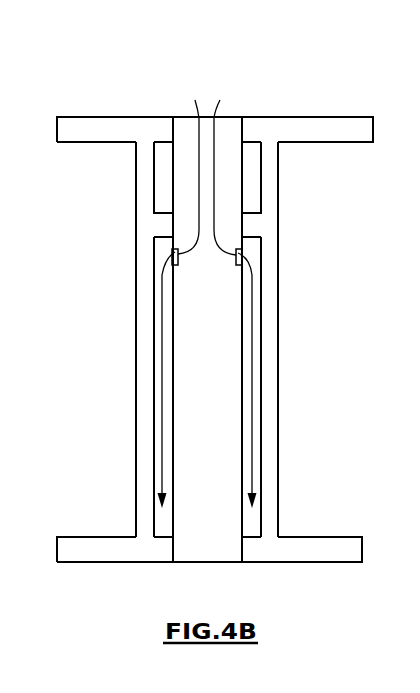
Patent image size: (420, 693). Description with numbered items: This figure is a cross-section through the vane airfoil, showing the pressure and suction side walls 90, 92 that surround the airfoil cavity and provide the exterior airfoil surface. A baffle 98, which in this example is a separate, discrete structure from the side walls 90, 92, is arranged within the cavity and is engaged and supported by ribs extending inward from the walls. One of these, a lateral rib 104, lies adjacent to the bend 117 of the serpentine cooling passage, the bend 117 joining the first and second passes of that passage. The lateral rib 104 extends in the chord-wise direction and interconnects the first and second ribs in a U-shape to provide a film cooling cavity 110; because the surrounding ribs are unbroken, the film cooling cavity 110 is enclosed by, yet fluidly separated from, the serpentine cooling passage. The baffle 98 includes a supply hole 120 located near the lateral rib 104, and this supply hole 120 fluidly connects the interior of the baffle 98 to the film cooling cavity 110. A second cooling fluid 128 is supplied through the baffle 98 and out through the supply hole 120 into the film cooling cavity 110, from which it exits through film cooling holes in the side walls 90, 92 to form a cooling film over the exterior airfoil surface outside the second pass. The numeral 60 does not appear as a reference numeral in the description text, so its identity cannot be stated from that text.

The fluid diverter assembly 60 is at (277, 89).
The pressure side wall 90 is at (145, 338).
The suction side wall 92 is at (272, 384).
The baffle 98 is at (199, 540).
The lateral rib 104 is at (263, 221).
The film cooling cavity 110 is at (149, 518).
The bend 117 is at (153, 184).
The supply hole 120 is at (159, 246).
The second cooling fluid 128 is at (217, 113).